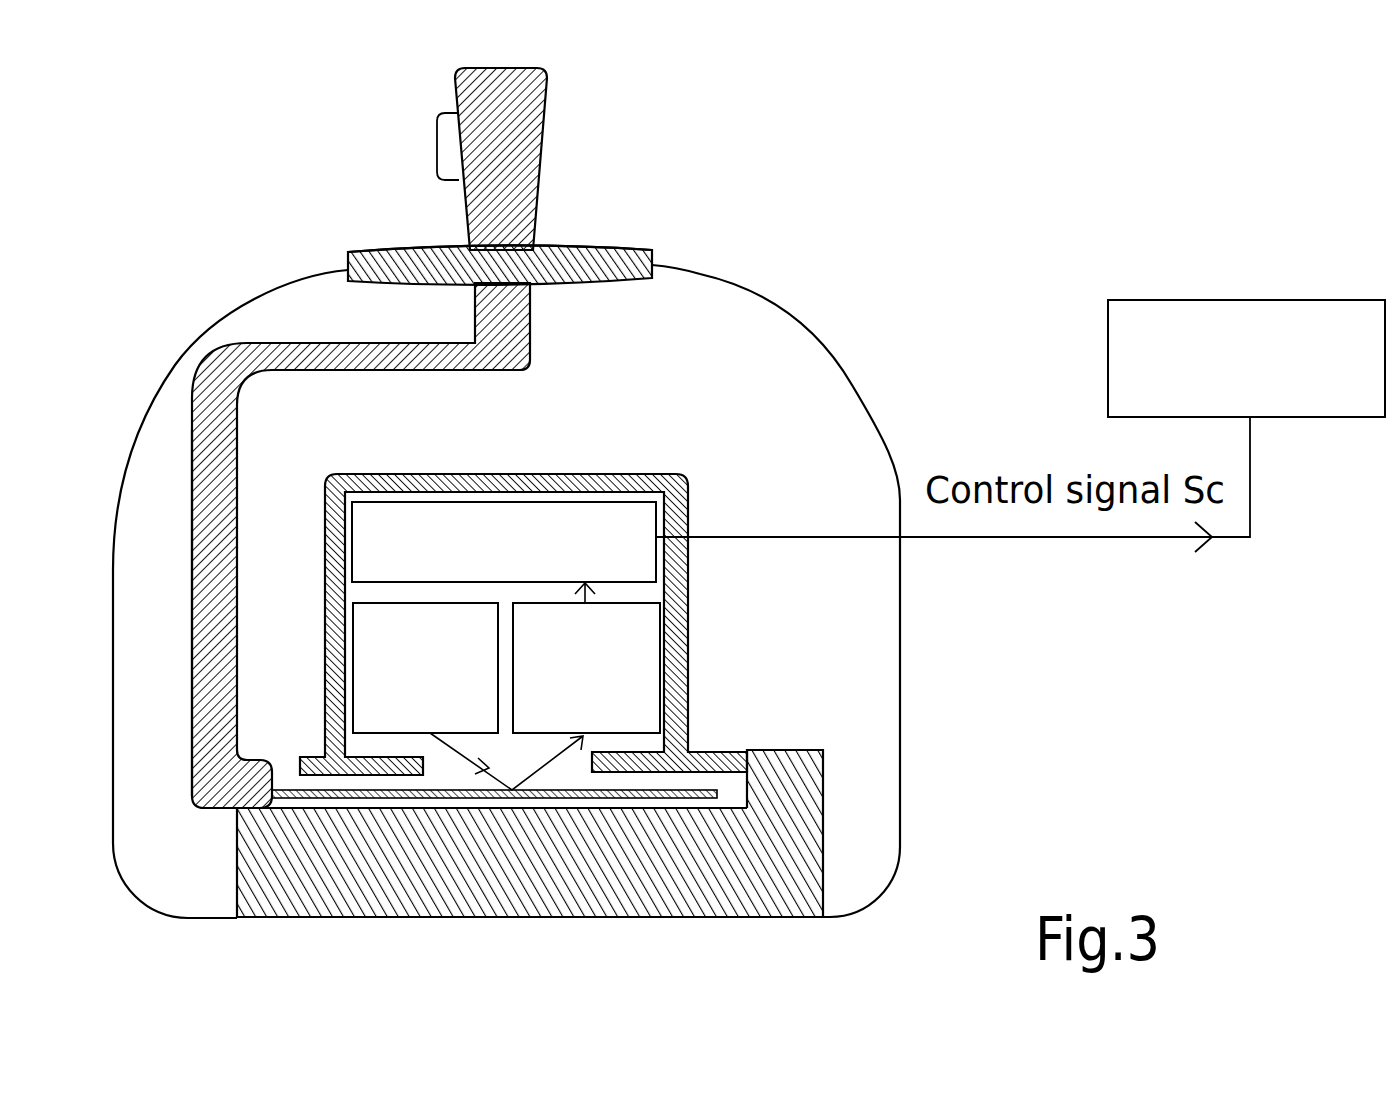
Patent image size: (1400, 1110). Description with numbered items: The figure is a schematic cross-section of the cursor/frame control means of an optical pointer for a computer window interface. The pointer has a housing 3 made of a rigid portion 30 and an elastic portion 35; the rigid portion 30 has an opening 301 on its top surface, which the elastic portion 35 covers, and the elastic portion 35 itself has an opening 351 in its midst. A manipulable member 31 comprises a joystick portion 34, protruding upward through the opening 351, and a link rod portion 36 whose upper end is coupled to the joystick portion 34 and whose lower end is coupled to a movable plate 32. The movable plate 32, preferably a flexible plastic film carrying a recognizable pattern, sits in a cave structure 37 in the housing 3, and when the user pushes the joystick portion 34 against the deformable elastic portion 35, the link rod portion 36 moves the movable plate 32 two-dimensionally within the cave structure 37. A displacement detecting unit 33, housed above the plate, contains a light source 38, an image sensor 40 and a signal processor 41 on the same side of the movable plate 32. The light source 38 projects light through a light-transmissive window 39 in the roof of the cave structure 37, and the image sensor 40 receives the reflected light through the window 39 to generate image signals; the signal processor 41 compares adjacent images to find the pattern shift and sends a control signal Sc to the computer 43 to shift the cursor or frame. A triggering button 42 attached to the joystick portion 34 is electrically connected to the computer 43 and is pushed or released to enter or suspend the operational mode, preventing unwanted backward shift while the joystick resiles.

The housing 3 is at (150, 450).
The rigid portion 30 is at (828, 325).
The opening 301 is at (650, 263).
The manipulable member 31 is at (355, 345).
The movable plate 32 is at (690, 810).
The displacement detecting unit 33 is at (370, 592).
The joystick portion 34 is at (522, 150).
The elastic portion 35 is at (400, 257).
The opening 351 is at (540, 245).
The link rod portion 36 is at (208, 648).
The cave structure 37 is at (730, 790).
The light source 38 is at (367, 655).
The light-transmissive window 39 is at (545, 775).
The image sensor 40 is at (645, 655).
The signal processor 41 is at (480, 520).
The triggering button 42 is at (447, 135).
The computer 43 is at (1303, 315).